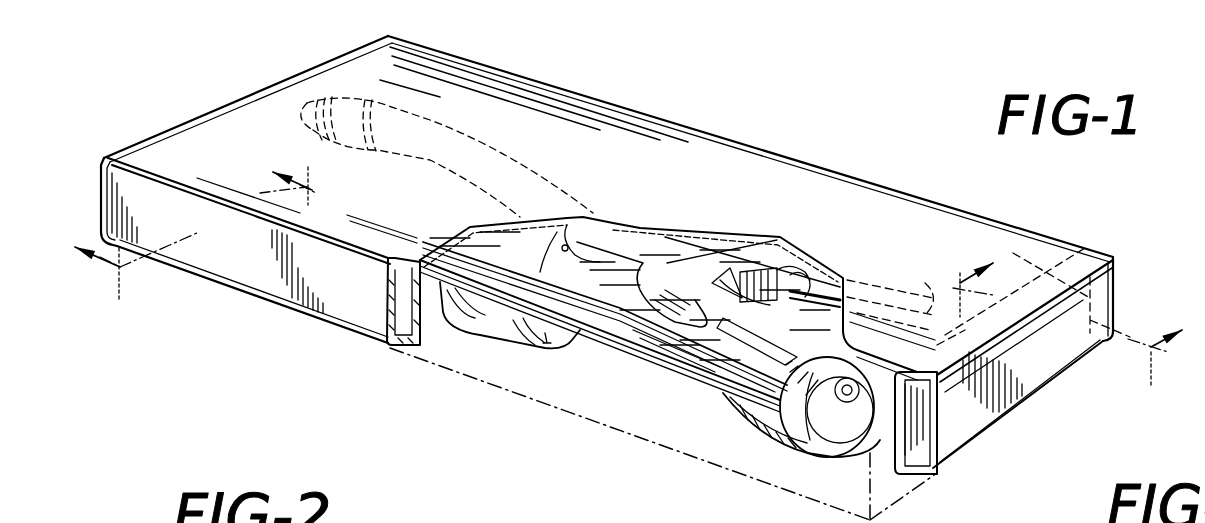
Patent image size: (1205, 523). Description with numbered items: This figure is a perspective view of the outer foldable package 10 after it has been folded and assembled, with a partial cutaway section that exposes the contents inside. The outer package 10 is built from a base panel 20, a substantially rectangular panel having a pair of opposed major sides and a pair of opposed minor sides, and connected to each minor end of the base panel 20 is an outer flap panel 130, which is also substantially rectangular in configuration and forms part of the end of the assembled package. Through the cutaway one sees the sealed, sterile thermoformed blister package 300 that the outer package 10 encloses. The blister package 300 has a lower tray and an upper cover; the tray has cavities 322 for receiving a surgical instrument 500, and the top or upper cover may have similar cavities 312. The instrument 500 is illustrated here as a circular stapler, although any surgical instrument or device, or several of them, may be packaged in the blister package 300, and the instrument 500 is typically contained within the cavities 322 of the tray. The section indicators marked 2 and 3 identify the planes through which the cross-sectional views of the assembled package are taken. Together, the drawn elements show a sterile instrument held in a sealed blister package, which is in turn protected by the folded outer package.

The outer foldable package 10 is at (795, 103).
The base panel 20 is at (668, 195).
The outer flap panel 130 is at (1043, 357).
The thermoformed blister package 300 is at (590, 392).
The cavities 312 is at (577, 232).
The cavities 322 is at (513, 318).
The surgical instrument 500 is at (710, 305).
The section line 2- 2 is at (205, 234).
The section line 3- 3 is at (1067, 319).